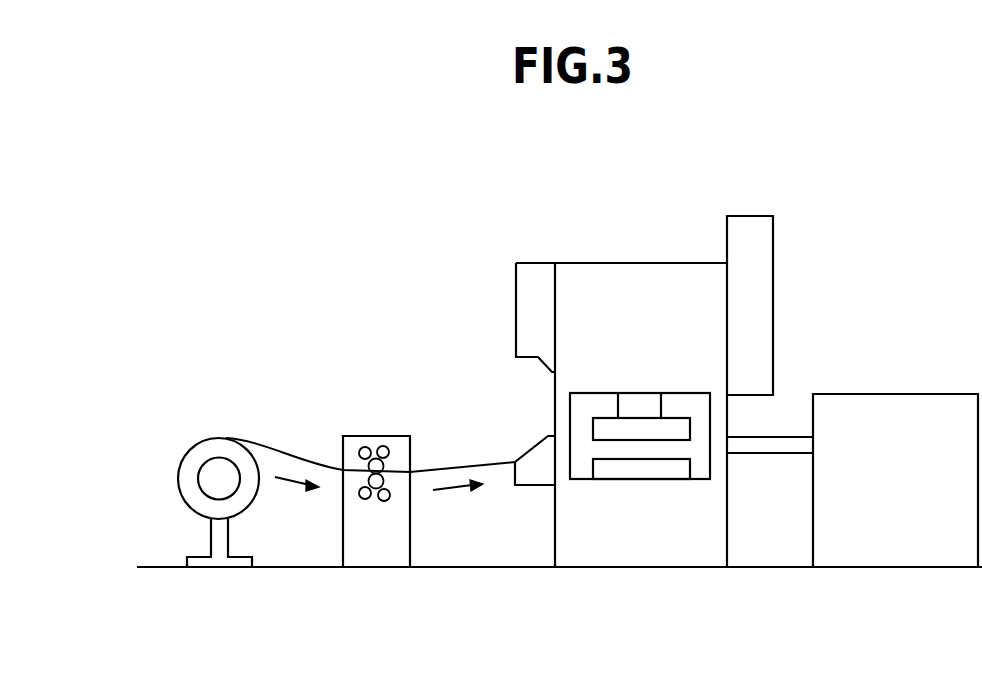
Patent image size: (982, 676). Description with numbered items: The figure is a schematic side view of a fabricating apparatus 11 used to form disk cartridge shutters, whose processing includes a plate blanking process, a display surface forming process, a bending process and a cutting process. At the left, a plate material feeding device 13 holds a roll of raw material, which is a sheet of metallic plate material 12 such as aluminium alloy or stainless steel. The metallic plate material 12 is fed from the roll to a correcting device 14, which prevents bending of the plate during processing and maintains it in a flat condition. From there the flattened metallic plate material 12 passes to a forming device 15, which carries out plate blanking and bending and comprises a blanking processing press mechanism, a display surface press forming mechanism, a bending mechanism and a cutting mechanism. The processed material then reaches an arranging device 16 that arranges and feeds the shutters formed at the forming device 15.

The fabricating apparatus 11 is at (330, 339).
The metallic plate material 12 is at (267, 450).
The plate material feeding device 13 is at (193, 457).
The correcting device 14 is at (400, 436).
The forming device 15 is at (634, 256).
The arranging device 16 is at (907, 405).